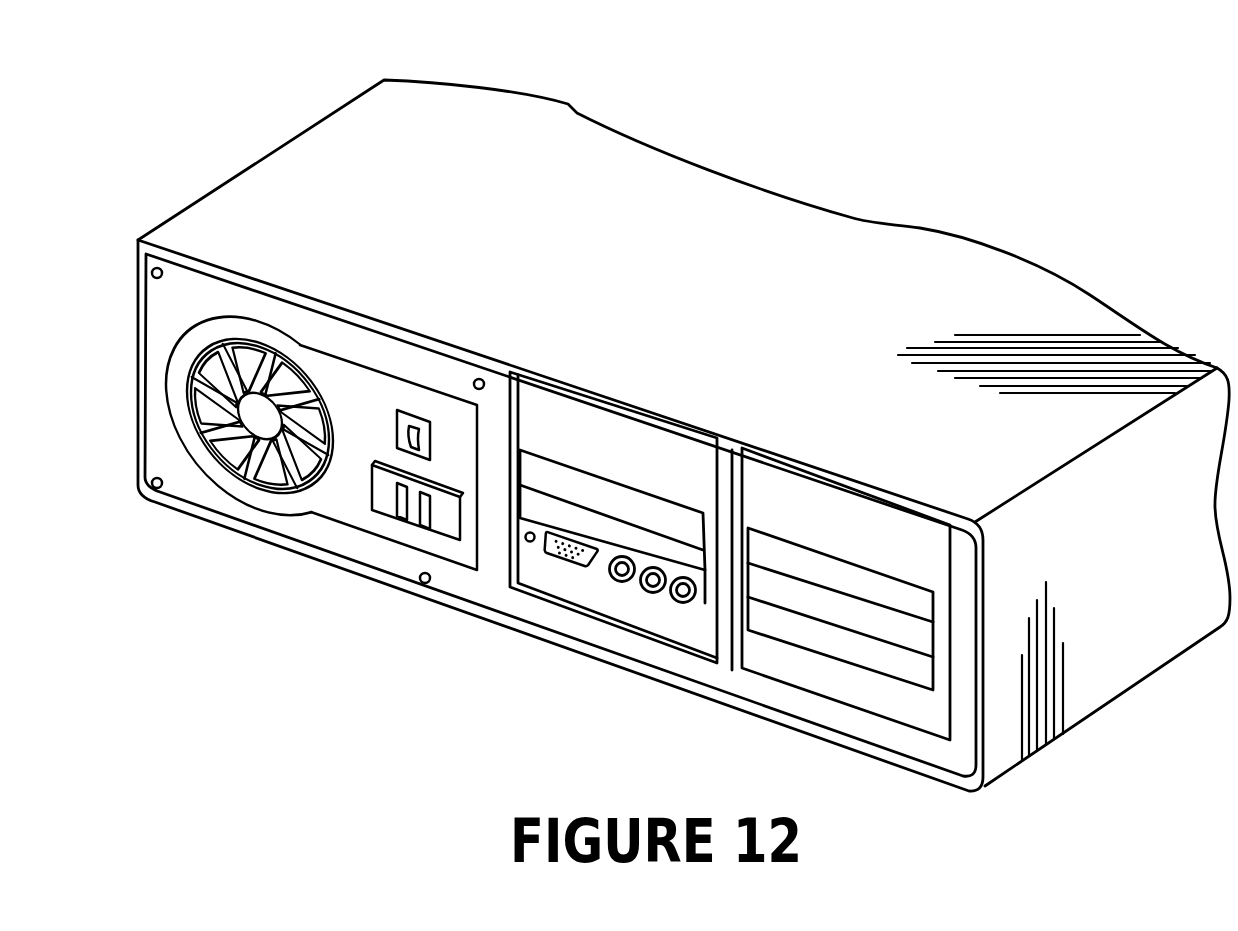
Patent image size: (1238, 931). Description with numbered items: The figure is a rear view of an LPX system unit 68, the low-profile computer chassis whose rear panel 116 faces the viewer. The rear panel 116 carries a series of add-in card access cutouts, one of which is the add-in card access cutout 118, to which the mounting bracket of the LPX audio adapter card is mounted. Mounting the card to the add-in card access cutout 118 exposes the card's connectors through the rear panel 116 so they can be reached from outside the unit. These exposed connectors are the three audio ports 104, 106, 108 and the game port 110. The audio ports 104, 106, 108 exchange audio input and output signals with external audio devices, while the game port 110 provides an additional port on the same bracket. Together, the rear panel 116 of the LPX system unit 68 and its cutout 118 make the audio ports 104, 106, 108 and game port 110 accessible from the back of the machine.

The LPX system unit 68 is at (473, 135).
The audio port 104 is at (683, 603).
The audio port 106 is at (652, 593).
The audio port 108 is at (620, 582).
The game port 110 is at (564, 565).
The rear panel 116 is at (482, 590).
The add-in card access cutout 118 is at (915, 685).